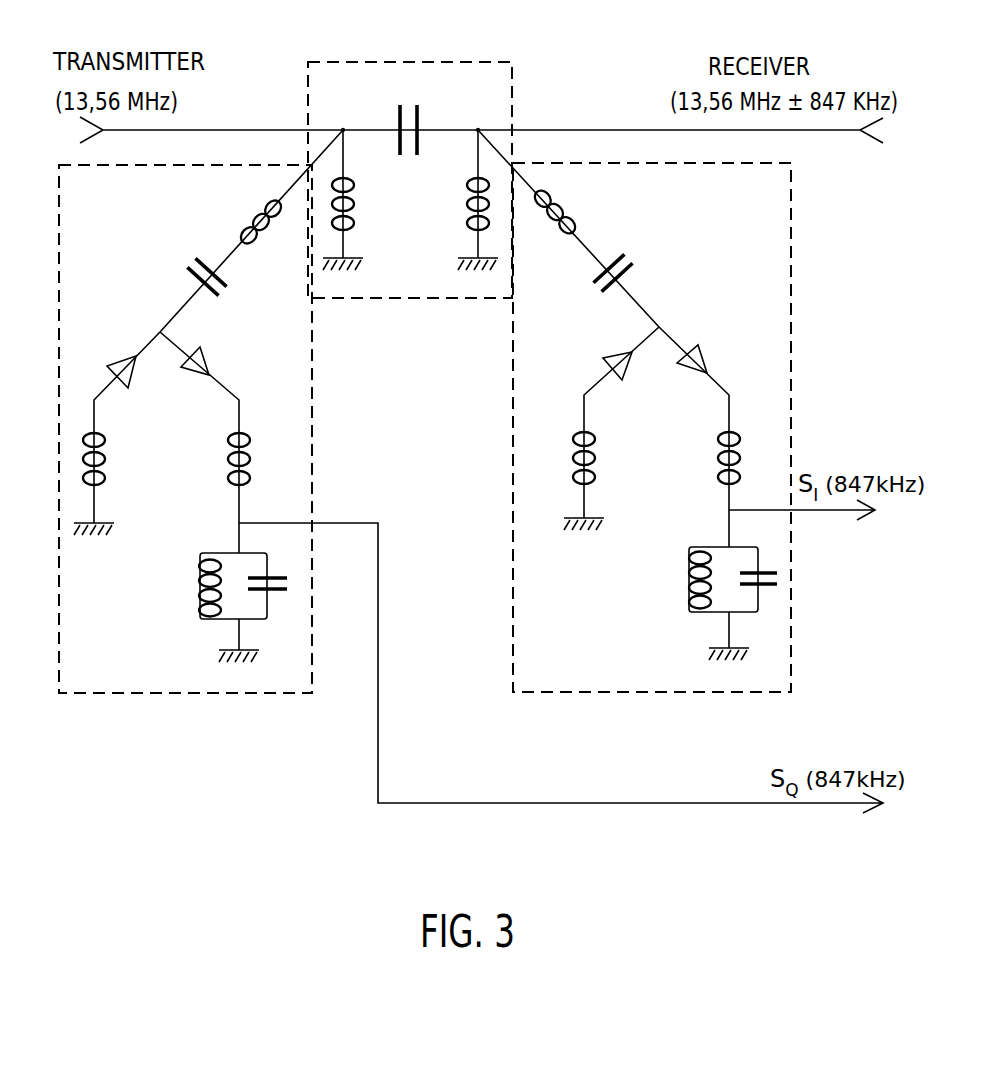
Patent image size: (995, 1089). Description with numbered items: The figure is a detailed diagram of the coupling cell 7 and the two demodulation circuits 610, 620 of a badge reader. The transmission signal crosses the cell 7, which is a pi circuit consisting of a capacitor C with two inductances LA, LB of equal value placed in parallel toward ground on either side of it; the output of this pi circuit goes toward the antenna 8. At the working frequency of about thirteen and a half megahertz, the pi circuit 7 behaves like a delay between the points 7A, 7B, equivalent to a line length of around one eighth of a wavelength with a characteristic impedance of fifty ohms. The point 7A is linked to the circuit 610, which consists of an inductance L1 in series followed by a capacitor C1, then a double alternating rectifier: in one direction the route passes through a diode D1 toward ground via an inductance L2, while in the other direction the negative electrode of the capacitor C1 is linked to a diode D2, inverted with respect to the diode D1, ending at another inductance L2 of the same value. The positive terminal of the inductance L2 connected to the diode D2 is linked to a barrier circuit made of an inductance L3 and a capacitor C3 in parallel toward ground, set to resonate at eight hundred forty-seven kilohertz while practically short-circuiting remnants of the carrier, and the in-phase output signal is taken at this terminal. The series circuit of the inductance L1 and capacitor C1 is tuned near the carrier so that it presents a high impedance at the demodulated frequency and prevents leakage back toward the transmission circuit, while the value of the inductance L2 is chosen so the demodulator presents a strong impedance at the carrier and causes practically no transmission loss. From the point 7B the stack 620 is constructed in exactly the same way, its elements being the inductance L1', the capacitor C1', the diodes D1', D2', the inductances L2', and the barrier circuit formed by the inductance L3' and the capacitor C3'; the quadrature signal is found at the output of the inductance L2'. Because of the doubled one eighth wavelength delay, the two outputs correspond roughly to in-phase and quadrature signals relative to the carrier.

The cell 7 is at (364, 62).
The point 7A is at (478, 130).
The point 7B is at (343, 130).
The antenna 8 is at (868, 136).
The capacitor C is at (418, 128).
The inductance LA is at (355, 200).
The inductance LB is at (468, 200).
The circuit 610 is at (655, 692).
The stack 620 is at (188, 693).
The inductance L1 is at (569, 211).
The capacitor C1 is at (630, 265).
The diode D1 is at (615, 378).
The diode D2 is at (701, 378).
The inductance L2 is at (640, 488).
The inductance L3 is at (705, 603).
The capacitor C3 is at (765, 599).
The inductance L1' is at (252, 221).
The capacitor C1' is at (187, 267).
The diode D1' is at (122, 379).
The diode D2' is at (202, 381).
The inductance L2' is at (162, 491).
The inductance L3' is at (214, 607).
The capacitor C3' is at (277, 606).